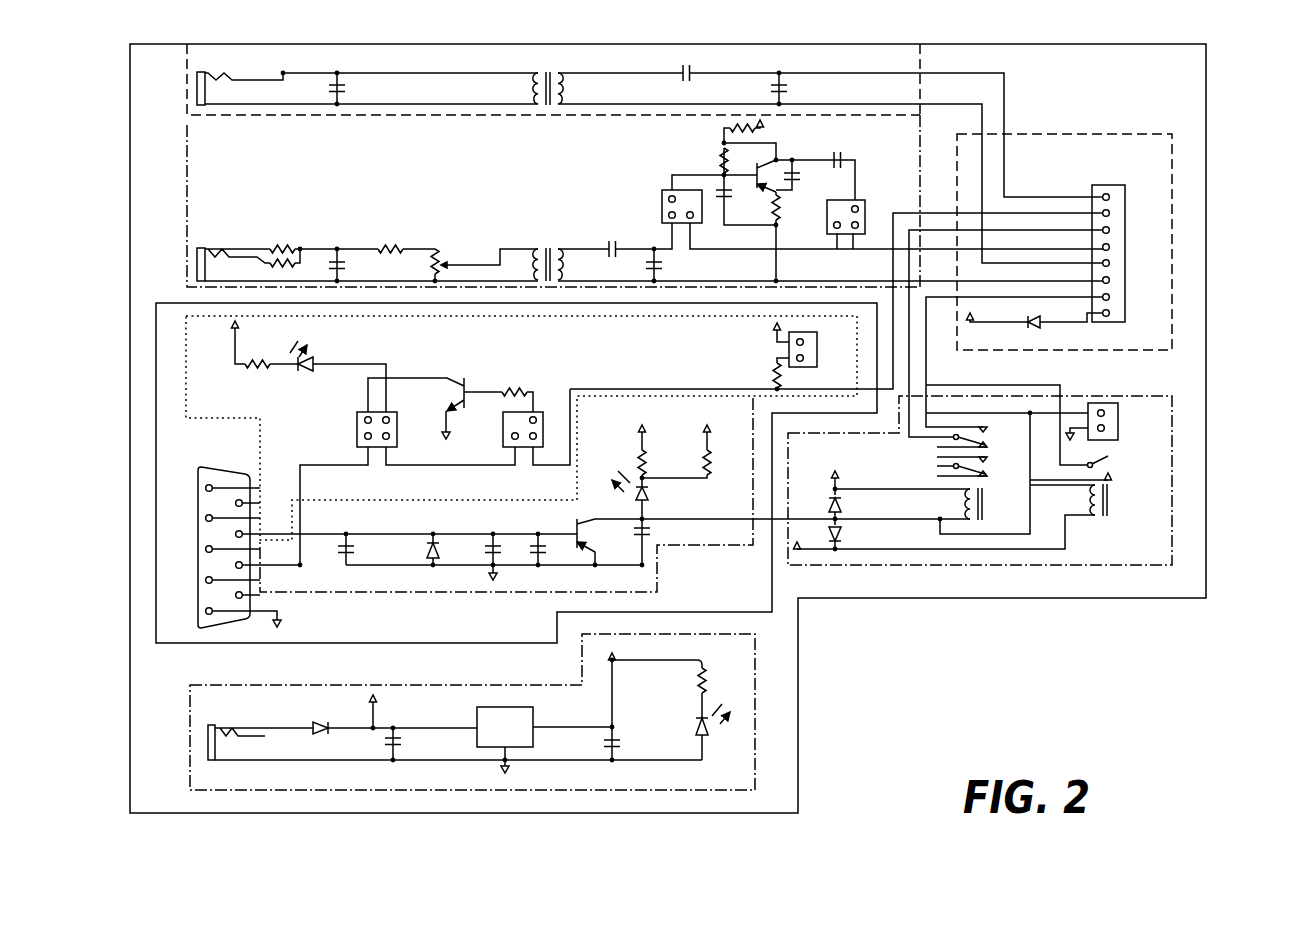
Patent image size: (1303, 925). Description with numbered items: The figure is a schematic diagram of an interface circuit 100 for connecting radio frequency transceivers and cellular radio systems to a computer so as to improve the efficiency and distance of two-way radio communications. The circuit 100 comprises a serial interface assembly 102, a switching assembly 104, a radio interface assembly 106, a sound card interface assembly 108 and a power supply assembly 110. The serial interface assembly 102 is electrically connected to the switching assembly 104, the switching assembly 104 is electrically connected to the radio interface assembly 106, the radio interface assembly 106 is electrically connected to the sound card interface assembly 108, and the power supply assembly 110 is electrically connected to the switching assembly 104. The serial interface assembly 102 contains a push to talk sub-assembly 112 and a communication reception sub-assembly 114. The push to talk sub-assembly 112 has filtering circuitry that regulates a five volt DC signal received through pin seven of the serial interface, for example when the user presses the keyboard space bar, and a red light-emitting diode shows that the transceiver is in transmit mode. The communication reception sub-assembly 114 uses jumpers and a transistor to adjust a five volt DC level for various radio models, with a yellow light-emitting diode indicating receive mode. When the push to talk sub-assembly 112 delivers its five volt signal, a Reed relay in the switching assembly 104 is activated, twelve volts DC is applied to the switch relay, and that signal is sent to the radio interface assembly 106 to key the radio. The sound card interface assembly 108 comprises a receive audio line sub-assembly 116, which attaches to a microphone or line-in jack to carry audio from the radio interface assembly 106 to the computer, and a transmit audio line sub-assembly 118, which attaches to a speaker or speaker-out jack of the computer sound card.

The circuit 100 is at (1212, 61).
The serial interface assembly 102 is at (156, 443).
The switching assembly 104 is at (1133, 396).
The radio interface assembly 106 is at (1113, 133).
The sound card interface assembly 108 is at (920, 115).
The power supply assembly 110 is at (190, 735).
The push to talk sub-assembly 112 is at (186, 360).
The communication reception sub-assembly 114 is at (363, 593).
The receive audio line sub-assembly 116 is at (187, 53).
The transmit audio line sub-assembly 118 is at (187, 200).